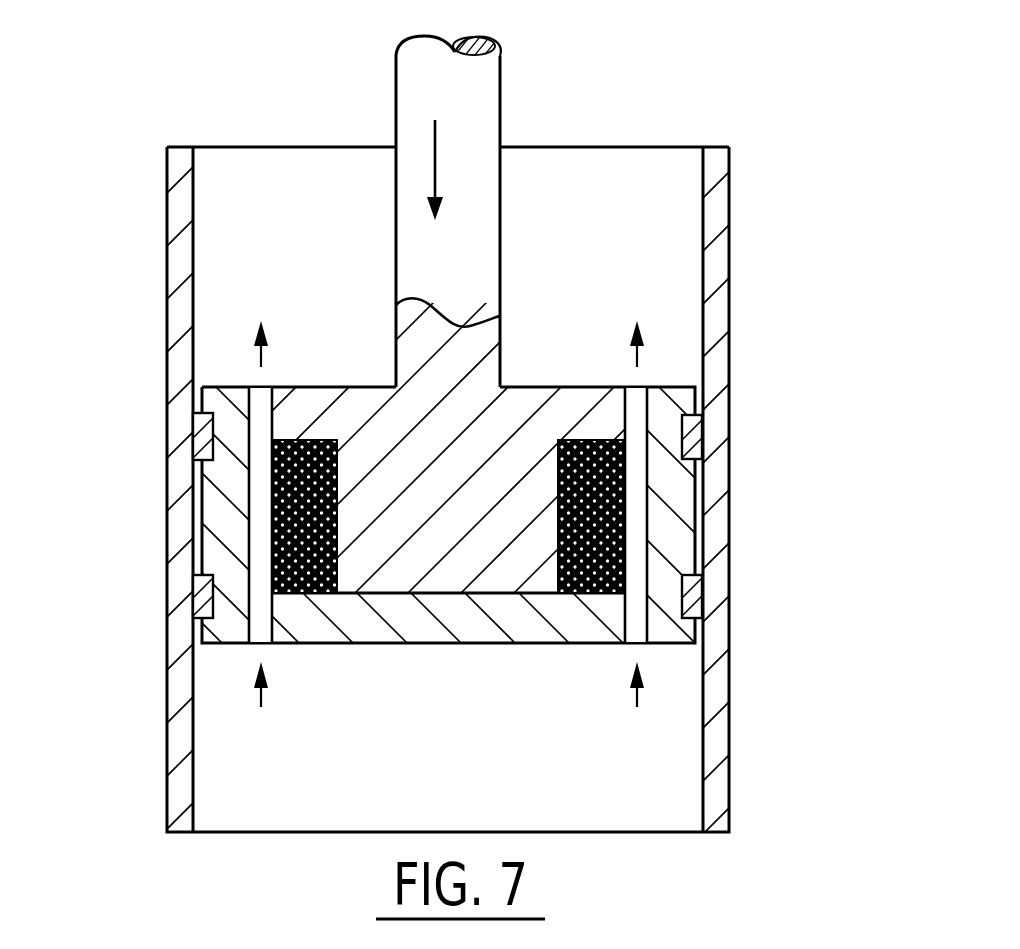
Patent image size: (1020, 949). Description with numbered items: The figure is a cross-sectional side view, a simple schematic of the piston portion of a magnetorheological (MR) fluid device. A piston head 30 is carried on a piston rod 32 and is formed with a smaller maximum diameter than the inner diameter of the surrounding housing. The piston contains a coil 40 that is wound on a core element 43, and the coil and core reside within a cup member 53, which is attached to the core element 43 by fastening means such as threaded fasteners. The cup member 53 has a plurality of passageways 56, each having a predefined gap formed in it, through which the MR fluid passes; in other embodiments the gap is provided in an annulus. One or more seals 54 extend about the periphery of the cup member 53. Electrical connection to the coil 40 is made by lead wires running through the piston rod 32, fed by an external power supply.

The piston head 30 is at (712, 518).
The piston rod 32 is at (500, 130).
The coil 40 is at (578, 612).
The core element 43 is at (463, 553).
The cup member 53 is at (375, 630).
The seals 54 is at (194, 600).
The passageways 56 is at (259, 392).